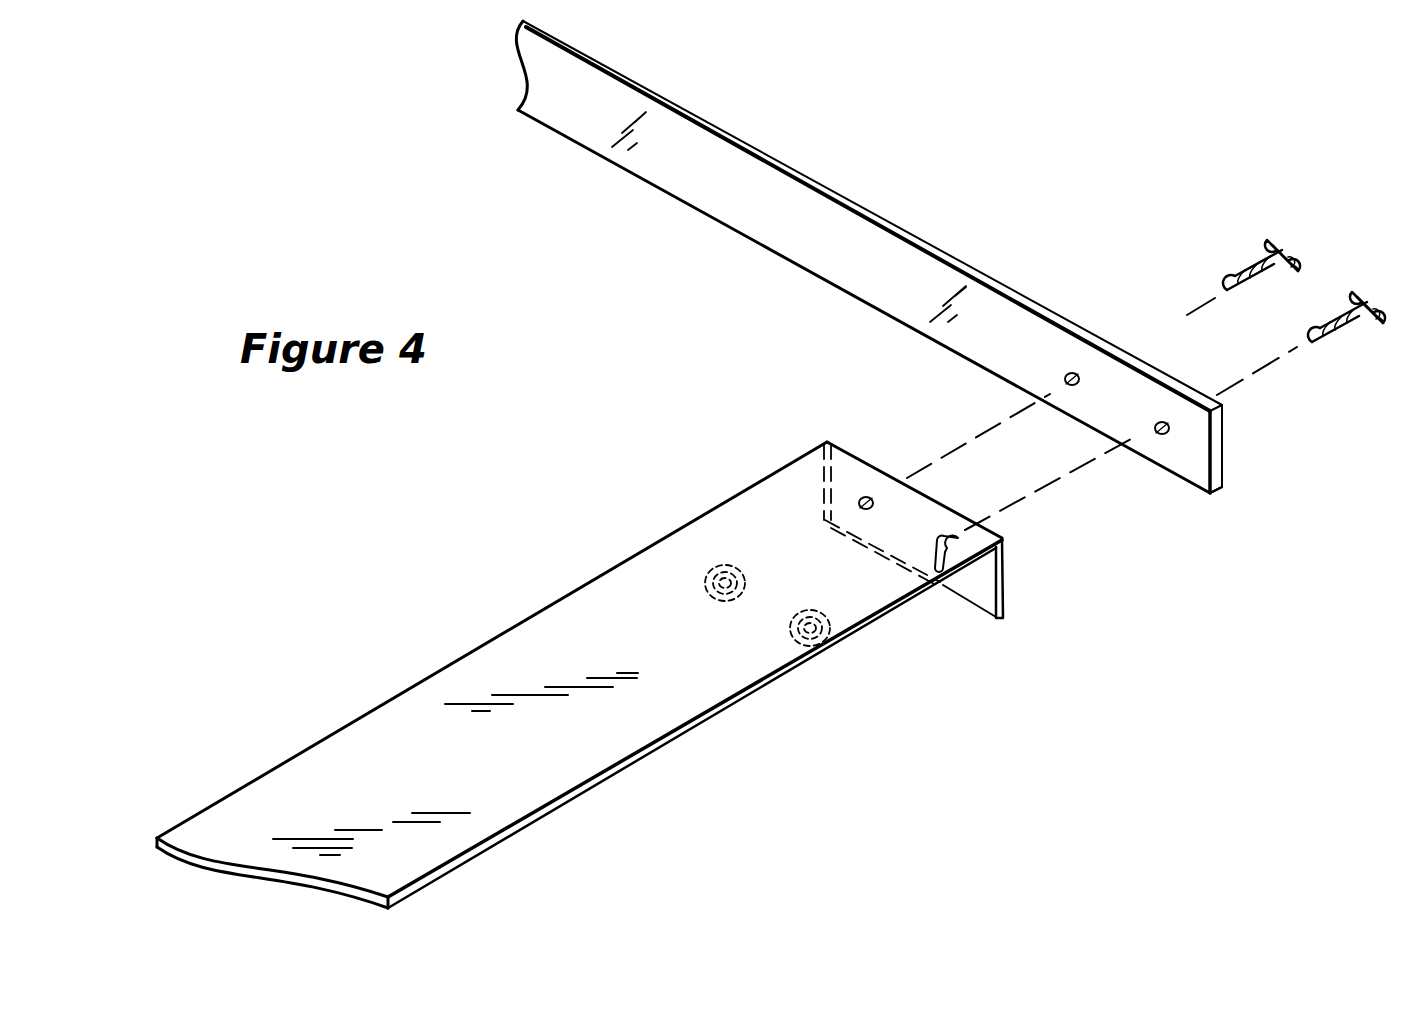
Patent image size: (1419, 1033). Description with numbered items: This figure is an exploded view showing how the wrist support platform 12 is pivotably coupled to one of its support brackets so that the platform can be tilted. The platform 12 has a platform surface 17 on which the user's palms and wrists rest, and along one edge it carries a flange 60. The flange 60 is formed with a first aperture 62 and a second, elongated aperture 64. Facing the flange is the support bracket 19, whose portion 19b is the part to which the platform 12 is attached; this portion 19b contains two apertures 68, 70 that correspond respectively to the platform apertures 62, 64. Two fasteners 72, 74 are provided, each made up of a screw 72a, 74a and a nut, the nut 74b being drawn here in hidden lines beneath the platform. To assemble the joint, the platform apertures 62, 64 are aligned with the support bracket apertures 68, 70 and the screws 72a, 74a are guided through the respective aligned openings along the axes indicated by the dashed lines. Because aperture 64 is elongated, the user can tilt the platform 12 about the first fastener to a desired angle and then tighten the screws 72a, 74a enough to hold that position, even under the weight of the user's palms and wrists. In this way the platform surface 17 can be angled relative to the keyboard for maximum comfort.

The platform 12 is at (579, 675).
The platform surface 17 is at (466, 775).
The support bracket 19 is at (735, 137).
The portion of the support bracket 19b is at (1230, 452).
The flange 60 is at (1008, 596).
The first aperture 62 is at (870, 495).
The second, elongated aperture 64 is at (955, 537).
The aperture 68 is at (1071, 372).
The aperture 70 is at (1161, 421).
The fastener 72 is at (1238, 228).
The screw 72a is at (1286, 228).
The fastener 74 is at (1359, 332).
The screw 74a is at (1359, 291).
The nut 74b is at (788, 632).